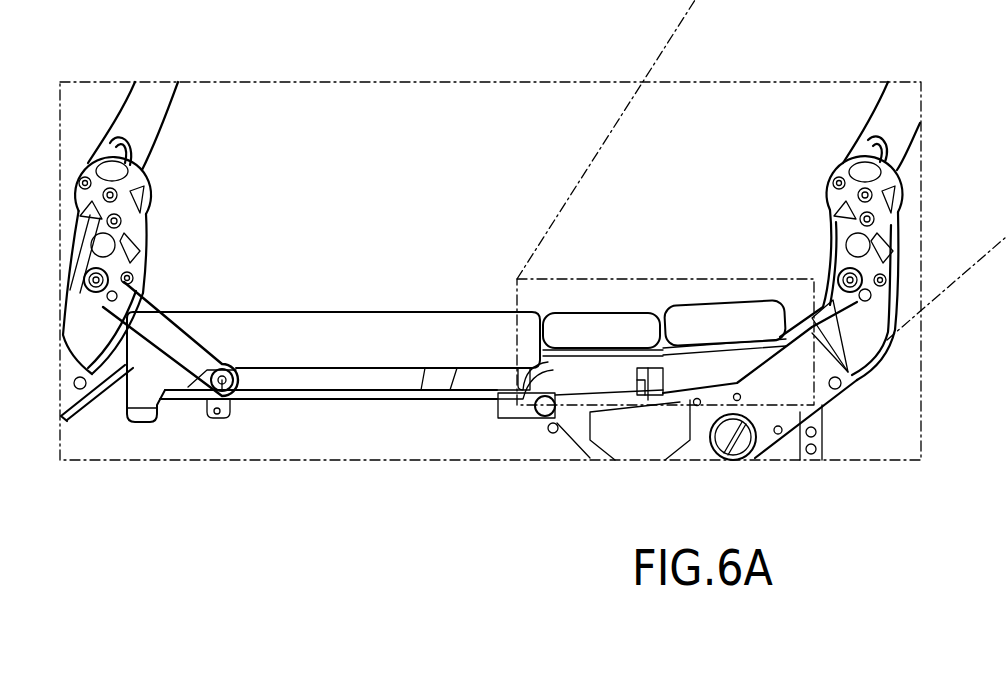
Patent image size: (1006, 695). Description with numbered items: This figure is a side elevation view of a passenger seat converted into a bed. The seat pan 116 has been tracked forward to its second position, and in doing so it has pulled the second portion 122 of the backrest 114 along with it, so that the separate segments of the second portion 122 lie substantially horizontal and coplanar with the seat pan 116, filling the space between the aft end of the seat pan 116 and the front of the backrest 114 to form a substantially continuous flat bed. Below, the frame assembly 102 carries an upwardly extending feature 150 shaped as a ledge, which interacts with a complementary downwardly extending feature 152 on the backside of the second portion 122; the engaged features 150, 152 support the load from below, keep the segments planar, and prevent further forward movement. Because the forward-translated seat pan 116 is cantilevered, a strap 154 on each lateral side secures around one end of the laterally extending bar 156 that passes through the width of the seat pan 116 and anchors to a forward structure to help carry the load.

The backrest 114 is at (898, 130).
The seat pan 116 is at (318, 322).
The second portion 122 is at (643, 323).
The strap 154 is at (147, 303).
The laterally extending feature 156 is at (215, 423).
The upwardly extending feature 150 is at (643, 385).
The downwardly extending feature 152 is at (653, 385).
The frame assembly 102 is at (780, 438).